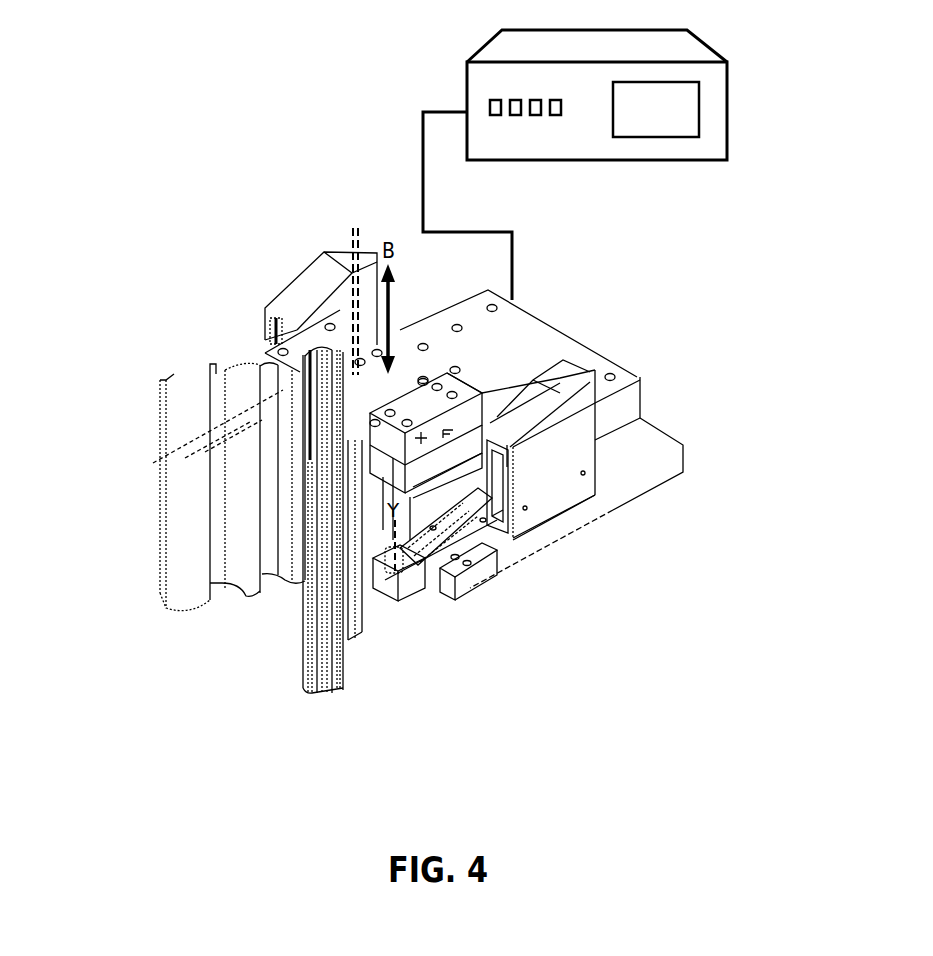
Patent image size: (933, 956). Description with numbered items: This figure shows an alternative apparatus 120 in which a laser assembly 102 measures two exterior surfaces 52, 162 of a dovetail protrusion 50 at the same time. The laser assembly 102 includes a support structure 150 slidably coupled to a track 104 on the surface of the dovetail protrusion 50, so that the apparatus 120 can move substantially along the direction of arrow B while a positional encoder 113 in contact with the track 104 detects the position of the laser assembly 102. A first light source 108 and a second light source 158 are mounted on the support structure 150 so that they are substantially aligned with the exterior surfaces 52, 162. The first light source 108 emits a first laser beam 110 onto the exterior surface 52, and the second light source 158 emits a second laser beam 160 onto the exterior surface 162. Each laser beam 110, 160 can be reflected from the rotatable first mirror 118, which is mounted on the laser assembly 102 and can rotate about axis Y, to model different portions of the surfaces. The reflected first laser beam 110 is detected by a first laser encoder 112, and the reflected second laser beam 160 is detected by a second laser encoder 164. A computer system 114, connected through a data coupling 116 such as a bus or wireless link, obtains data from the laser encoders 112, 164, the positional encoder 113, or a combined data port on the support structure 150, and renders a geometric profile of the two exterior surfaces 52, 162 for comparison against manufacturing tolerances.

The dovetail protrusion 50 is at (116, 380).
The exterior surface 52 is at (210, 370).
The laser assembly 102 is at (553, 287).
The track 104 is at (351, 248).
The first light source 108 is at (305, 286).
The first laser beam 110 is at (262, 408).
The first laser encoder 112 is at (285, 338).
The positional encoder 113 is at (438, 373).
The computer system 114 is at (640, 121).
The data coupling 116 is at (422, 229).
The first mirror 118 is at (398, 568).
The apparatus 120 is at (843, 503).
The support structure 150 is at (620, 412).
The second light source 158 is at (555, 485).
The second laser beam 160 is at (457, 533).
The exterior surface 162 is at (358, 585).
The second laser encoder 164 is at (497, 457).